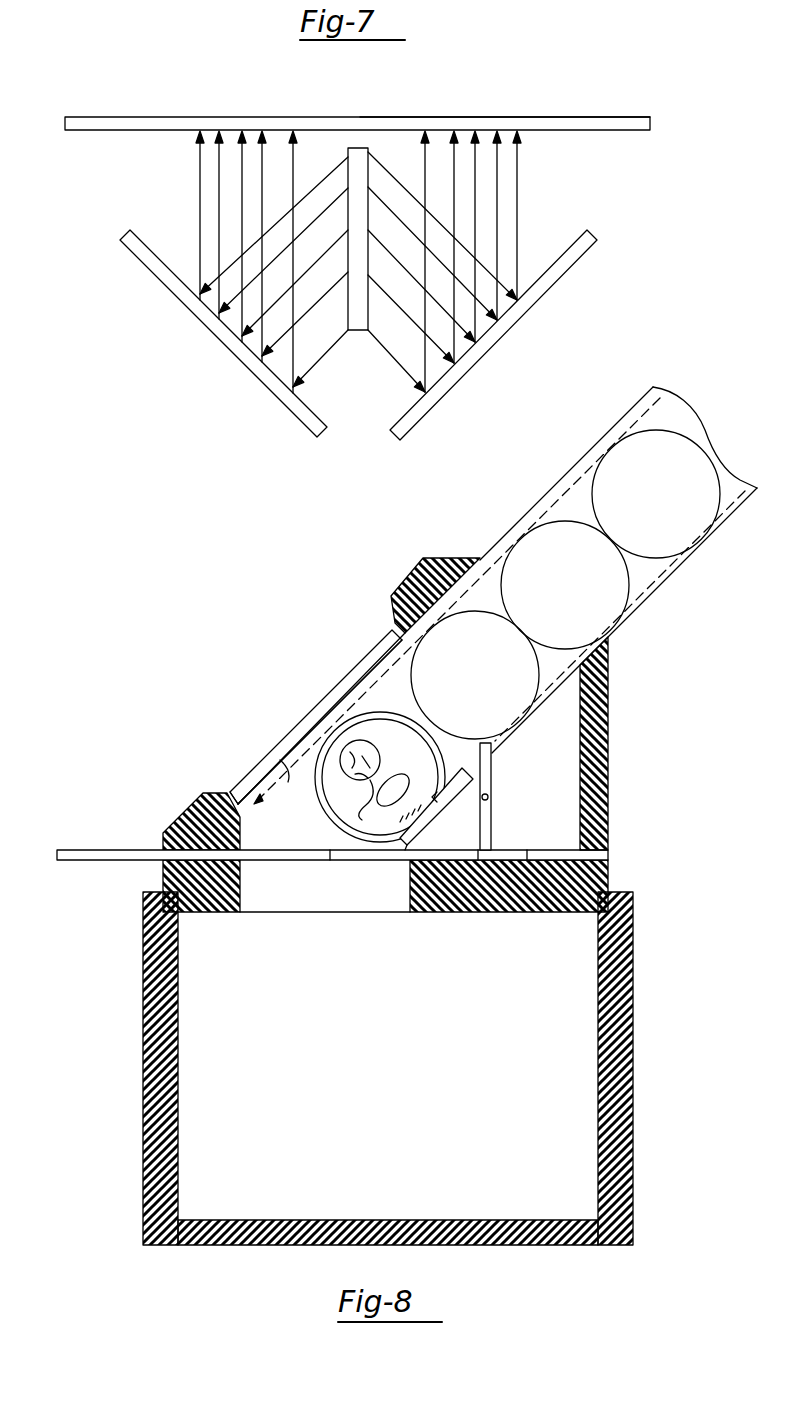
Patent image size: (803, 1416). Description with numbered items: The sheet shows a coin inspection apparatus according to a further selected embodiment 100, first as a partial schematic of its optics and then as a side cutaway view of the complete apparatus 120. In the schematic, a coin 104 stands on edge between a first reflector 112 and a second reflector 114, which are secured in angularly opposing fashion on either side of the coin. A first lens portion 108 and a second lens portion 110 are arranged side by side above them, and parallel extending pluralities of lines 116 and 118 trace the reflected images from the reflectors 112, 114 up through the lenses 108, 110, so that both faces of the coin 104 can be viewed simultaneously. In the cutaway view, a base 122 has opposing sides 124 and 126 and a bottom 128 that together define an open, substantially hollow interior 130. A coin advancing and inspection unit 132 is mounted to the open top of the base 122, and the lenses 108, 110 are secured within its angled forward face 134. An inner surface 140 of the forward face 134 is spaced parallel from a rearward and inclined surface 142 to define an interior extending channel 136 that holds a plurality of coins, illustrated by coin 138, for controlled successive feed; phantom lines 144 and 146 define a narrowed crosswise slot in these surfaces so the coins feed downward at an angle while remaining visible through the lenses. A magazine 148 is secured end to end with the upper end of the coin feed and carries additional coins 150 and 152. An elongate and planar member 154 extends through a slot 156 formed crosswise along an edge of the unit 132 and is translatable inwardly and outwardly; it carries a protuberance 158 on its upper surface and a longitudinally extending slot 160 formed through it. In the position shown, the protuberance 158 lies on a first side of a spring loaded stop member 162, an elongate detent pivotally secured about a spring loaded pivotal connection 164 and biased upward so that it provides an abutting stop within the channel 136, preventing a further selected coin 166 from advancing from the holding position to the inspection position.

In FIG. 7, the further selected embodiment 100 is at (145, 100).
In FIG. 7, the coin 104 is at (358, 332).
In FIG. 7, the first lens portion 108 is at (238, 124).
In FIG. 8, the first lens portion 108 is at (356, 658).
In FIG. 7, the second lens portion 110 is at (498, 124).
In FIG. 8, the second lens portion 110 is at (320, 722).
In FIG. 7, the first reflector 112 is at (222, 345).
In FIG. 7, the second reflector 114 is at (493, 340).
In FIG. 7, the parallel extending plurality of lines 116 is at (219, 214).
In FIG. 7, the parallel extending plurality of lines 118 is at (517, 218).
In FIG. 8, the coin inspection apparatus 120 is at (220, 655).
In FIG. 8, the base 122 is at (377, 1096).
In FIG. 8, the side 124 is at (143, 1110).
In FIG. 8, the side 126 is at (635, 1088).
In FIG. 8, the bottom 128 is at (293, 1248).
In FIG. 8, the hollow interior 130 is at (408, 1097).
In FIG. 8, the coin advancing and inspection unit 132 is at (370, 576).
In FIG. 8, the angled forward face 134 is at (342, 698).
In FIG. 8, the interior extending channel 136 is at (312, 824).
In FIG. 8, the coin 138 is at (417, 756).
In FIG. 8, the inner surface 140 is at (287, 770).
In FIG. 8, the rearward and inclined surface 142 is at (478, 770).
In FIG. 8, the phantom line 144 is at (240, 797).
In FIG. 8, the phantom line 146 is at (432, 795).
In FIG. 8, the magazine 148 is at (535, 495).
In FIG. 8, the additional coin 150 is at (587, 573).
In FIG. 8, the additional coin 152 is at (680, 480).
In FIG. 8, the elongate and planar member 154 is at (120, 850).
In FIG. 8, the slot 156 is at (163, 862).
In FIG. 8, the protuberance 158 is at (475, 855).
In FIG. 8, the longitudinally extending slot 160 is at (273, 860).
In FIG. 8, the spring loaded stop member 162 is at (505, 745).
In FIG. 8, the spring loaded pivotal connection 164 is at (490, 797).
In FIG. 8, the further selected coin 166 is at (495, 665).